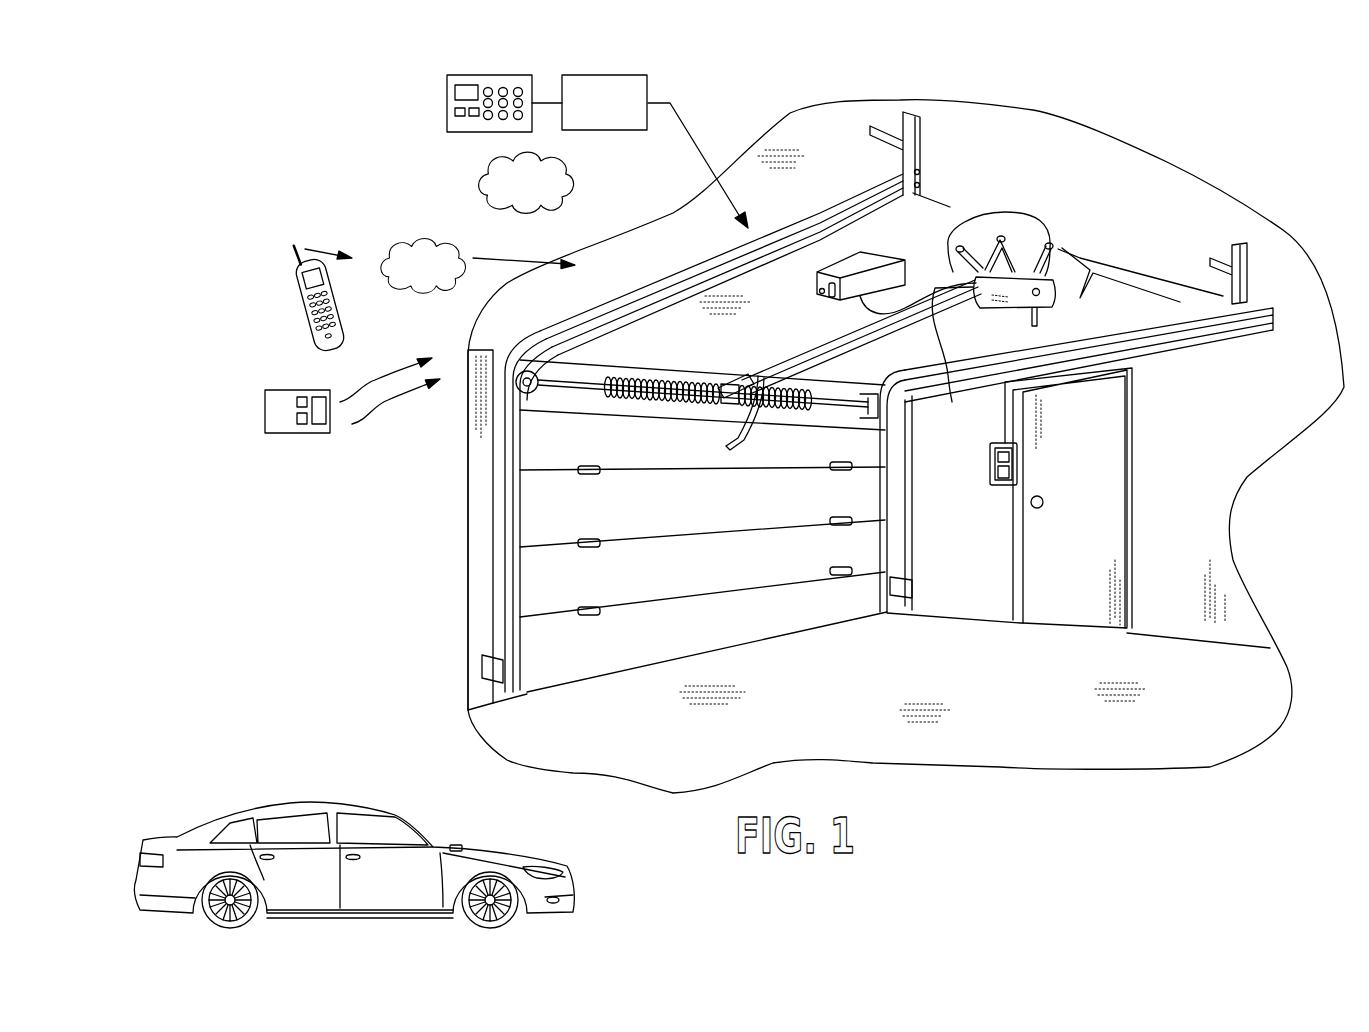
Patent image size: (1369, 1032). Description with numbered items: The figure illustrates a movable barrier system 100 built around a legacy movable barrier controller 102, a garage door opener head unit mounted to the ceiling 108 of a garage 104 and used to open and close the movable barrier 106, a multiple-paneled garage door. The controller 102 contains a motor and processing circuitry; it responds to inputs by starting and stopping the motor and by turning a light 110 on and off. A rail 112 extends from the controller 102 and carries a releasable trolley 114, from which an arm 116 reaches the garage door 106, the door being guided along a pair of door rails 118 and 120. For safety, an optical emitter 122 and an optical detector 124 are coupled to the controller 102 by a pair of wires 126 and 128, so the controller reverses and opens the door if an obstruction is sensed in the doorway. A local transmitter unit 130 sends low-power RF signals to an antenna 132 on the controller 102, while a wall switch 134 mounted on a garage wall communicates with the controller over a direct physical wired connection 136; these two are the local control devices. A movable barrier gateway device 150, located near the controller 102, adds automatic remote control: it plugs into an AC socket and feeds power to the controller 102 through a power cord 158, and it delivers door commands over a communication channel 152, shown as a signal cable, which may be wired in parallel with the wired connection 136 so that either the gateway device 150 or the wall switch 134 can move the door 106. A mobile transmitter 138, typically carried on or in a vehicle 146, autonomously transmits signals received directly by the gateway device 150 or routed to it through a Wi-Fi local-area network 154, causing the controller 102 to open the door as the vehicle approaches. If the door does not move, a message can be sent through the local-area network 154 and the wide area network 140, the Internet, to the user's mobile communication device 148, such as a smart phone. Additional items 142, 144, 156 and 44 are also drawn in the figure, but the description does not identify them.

The movable barrier system 100 is at (1272, 67).
The movable barrier controller 102 is at (891, 310).
The garage 104 is at (465, 505).
The movable barrier 106 is at (807, 607).
The ceiling 108 is at (1042, 128).
The light 110 is at (1017, 310).
The rail 112 is at (803, 343).
The releasable trolley 114 is at (810, 367).
The arm 116 is at (755, 436).
The door rail 118 is at (872, 182).
The door rail 120 is at (1215, 300).
The optical emitter 122 is at (900, 588).
The optical detector 124 is at (500, 668).
The wire 126 is at (493, 578).
The wire 128 is at (905, 540).
The local transmitter unit 130 is at (265, 407).
The antenna 132 is at (1040, 325).
The wall switch 134 is at (990, 466).
The direct physical wired connection 136 is at (1214, 340).
The mobile transmitter 138 is at (458, 845).
The wide area network 140 is at (407, 278).
The keypad device 142 is at (445, 98).
The server 144 is at (590, 113).
The vehicle 146 is at (292, 800).
The mobile communication device 148 is at (290, 290).
The movable barrier gateway device 150 is at (843, 263).
The communication channel 152 is at (1023, 213).
The local-area network 154 is at (510, 195).
The connector 156 is at (828, 297).
The power cord 158 is at (951, 359).
The power connection 44 is at (1133, 282).